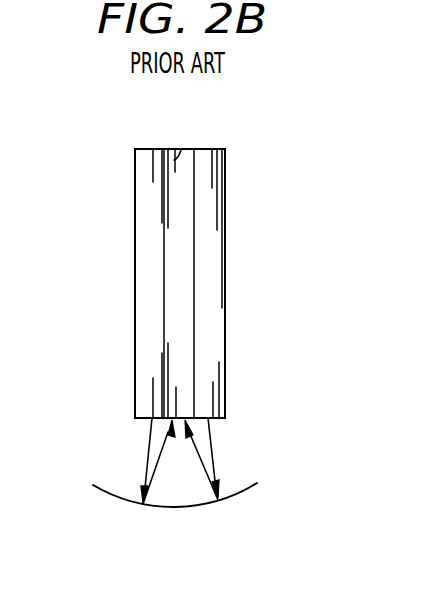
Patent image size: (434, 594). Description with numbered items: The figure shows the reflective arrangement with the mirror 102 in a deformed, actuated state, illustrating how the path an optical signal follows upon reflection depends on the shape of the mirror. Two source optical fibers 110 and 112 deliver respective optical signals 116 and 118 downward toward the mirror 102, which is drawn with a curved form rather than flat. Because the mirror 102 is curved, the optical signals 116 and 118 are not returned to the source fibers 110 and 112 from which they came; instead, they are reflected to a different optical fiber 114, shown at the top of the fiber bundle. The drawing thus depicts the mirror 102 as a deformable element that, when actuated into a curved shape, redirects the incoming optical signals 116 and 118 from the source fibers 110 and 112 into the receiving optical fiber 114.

The mirror 102 is at (250, 488).
The optical fiber 110 is at (145, 197).
The optical fiber 112 is at (214, 208).
The optical fiber 114 is at (181, 150).
The optical signal 116 is at (147, 452).
The optical signal 118 is at (215, 446).